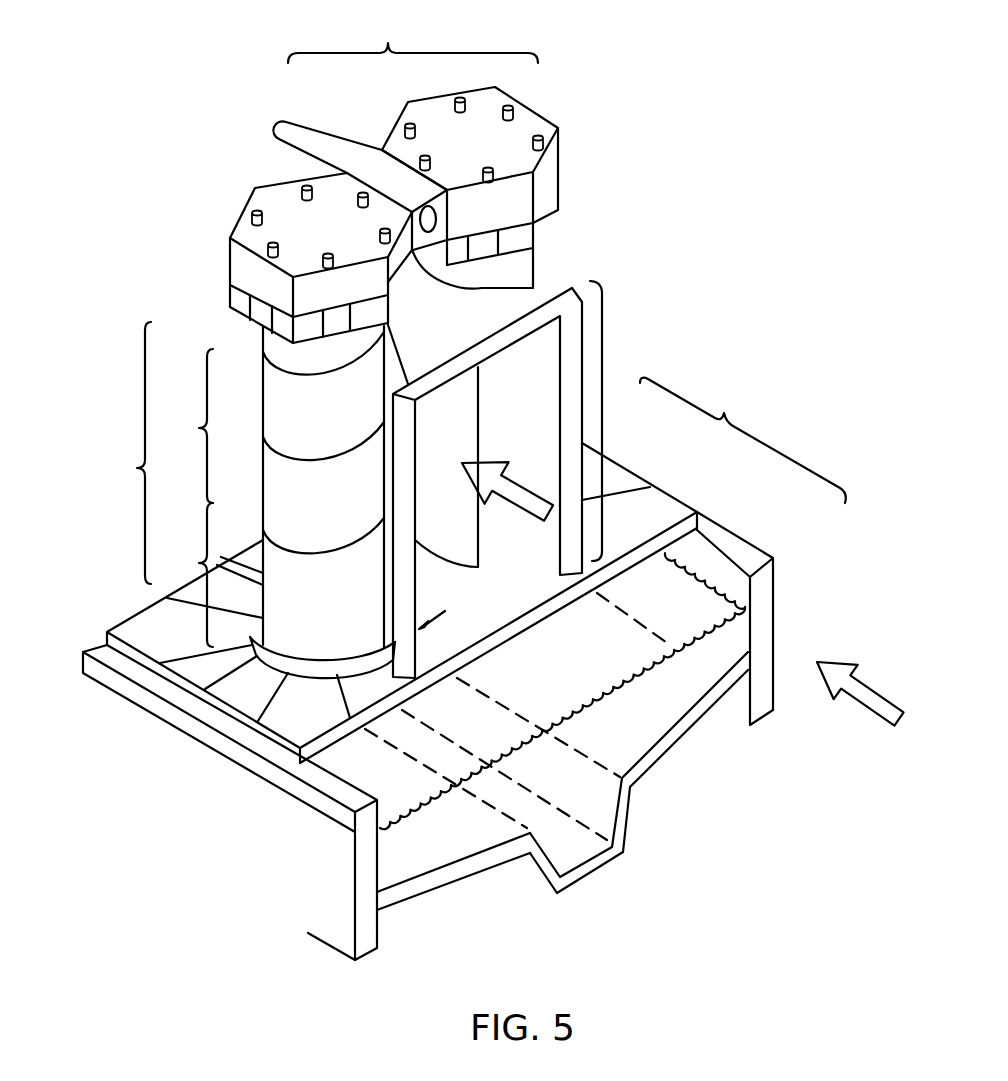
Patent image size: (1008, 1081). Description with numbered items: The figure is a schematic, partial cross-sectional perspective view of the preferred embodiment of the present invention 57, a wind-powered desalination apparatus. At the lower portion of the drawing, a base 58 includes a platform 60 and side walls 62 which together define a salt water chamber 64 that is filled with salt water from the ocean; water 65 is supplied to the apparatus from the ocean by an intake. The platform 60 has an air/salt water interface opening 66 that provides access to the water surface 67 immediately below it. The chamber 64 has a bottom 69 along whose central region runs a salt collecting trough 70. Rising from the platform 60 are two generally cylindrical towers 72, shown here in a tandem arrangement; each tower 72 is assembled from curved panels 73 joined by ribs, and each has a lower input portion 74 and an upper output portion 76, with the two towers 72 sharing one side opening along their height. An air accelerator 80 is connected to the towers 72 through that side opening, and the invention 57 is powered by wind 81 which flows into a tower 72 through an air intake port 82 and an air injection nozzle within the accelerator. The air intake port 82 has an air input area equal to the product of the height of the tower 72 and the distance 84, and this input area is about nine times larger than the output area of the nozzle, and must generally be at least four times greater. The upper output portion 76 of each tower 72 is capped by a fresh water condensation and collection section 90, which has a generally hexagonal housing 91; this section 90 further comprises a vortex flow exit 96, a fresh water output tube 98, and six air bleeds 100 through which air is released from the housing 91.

The present invention 57 is at (157, 82).
The base 58 is at (743, 440).
The platform 60 is at (690, 506).
The side walls 62 is at (100, 684).
The salt water chamber 64 is at (562, 687).
The water 65 is at (644, 755).
The air/salt water interface opening 66 is at (296, 678).
The water surface 67 is at (708, 627).
The bottom 69 is at (715, 718).
The salt collecting trough 70 is at (560, 855).
The towers 72 is at (608, 264).
The curved panels 73 is at (263, 440).
The lower input portion 74 is at (191, 575).
The upper output portion 76 is at (186, 426).
The air accelerator 80 is at (606, 333).
The wind 81 is at (520, 486).
The air intake port 82 is at (450, 360).
The distance 84 is at (448, 611).
The fresh water condensation and collection section 90 is at (413, 39).
The hexagonal housing 91 is at (535, 112).
The vortex flow exit 96 is at (250, 328).
The fresh water output tube 98 is at (284, 130).
The air bleeds 100 is at (363, 189).